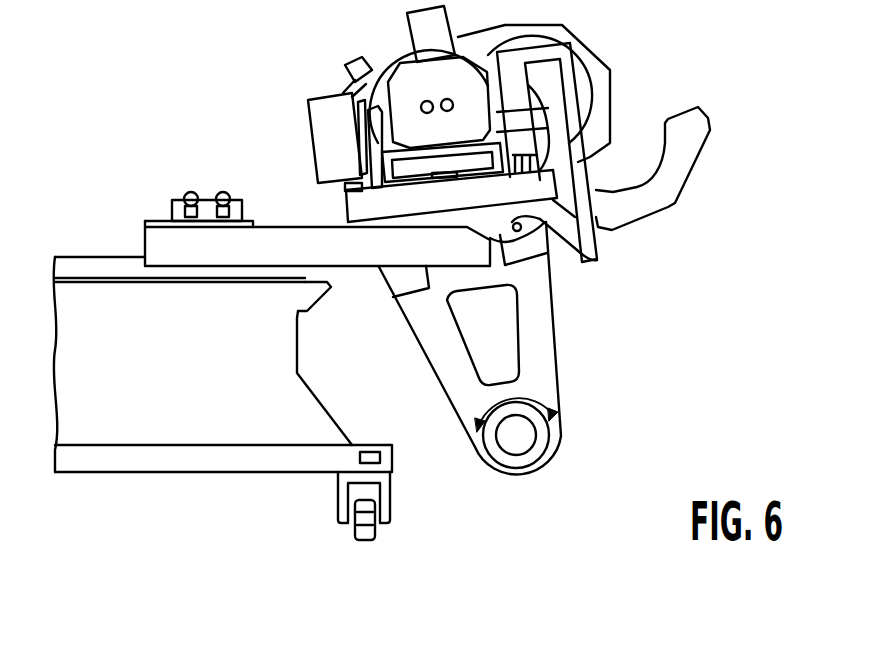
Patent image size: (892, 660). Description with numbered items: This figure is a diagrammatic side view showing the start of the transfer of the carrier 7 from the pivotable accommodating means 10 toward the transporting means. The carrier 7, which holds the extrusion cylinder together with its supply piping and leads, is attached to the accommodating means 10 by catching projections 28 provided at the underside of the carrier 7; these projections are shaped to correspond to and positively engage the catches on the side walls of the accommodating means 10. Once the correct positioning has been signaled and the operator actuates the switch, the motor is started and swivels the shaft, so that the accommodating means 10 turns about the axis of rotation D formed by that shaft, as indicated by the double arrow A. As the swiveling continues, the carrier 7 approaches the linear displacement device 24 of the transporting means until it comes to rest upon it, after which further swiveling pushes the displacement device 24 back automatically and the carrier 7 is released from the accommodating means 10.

The linear displacement device 24 is at (172, 240).
The carrier 7 is at (358, 208).
The catching projections 28 is at (597, 260).
The accommodating means 10 is at (551, 302).
The double arrow A is at (548, 403).
The axis of rotation D is at (532, 433).